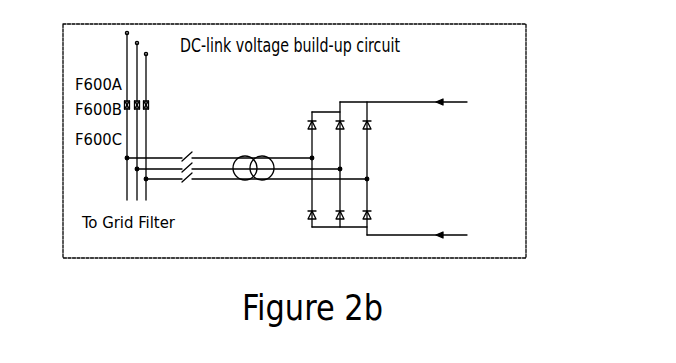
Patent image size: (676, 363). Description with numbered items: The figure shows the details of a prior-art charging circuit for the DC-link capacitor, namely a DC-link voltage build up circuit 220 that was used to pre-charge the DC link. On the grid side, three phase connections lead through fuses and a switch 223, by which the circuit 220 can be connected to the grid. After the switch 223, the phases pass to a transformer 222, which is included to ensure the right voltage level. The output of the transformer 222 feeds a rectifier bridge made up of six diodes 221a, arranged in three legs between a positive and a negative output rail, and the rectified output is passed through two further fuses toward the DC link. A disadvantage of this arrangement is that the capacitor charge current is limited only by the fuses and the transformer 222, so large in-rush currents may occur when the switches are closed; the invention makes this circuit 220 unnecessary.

The DC-link voltage build up circuit 220 is at (531, 67).
The diodes 221a is at (374, 127).
The transformer 222 is at (254, 151).
The switch 223 is at (191, 121).